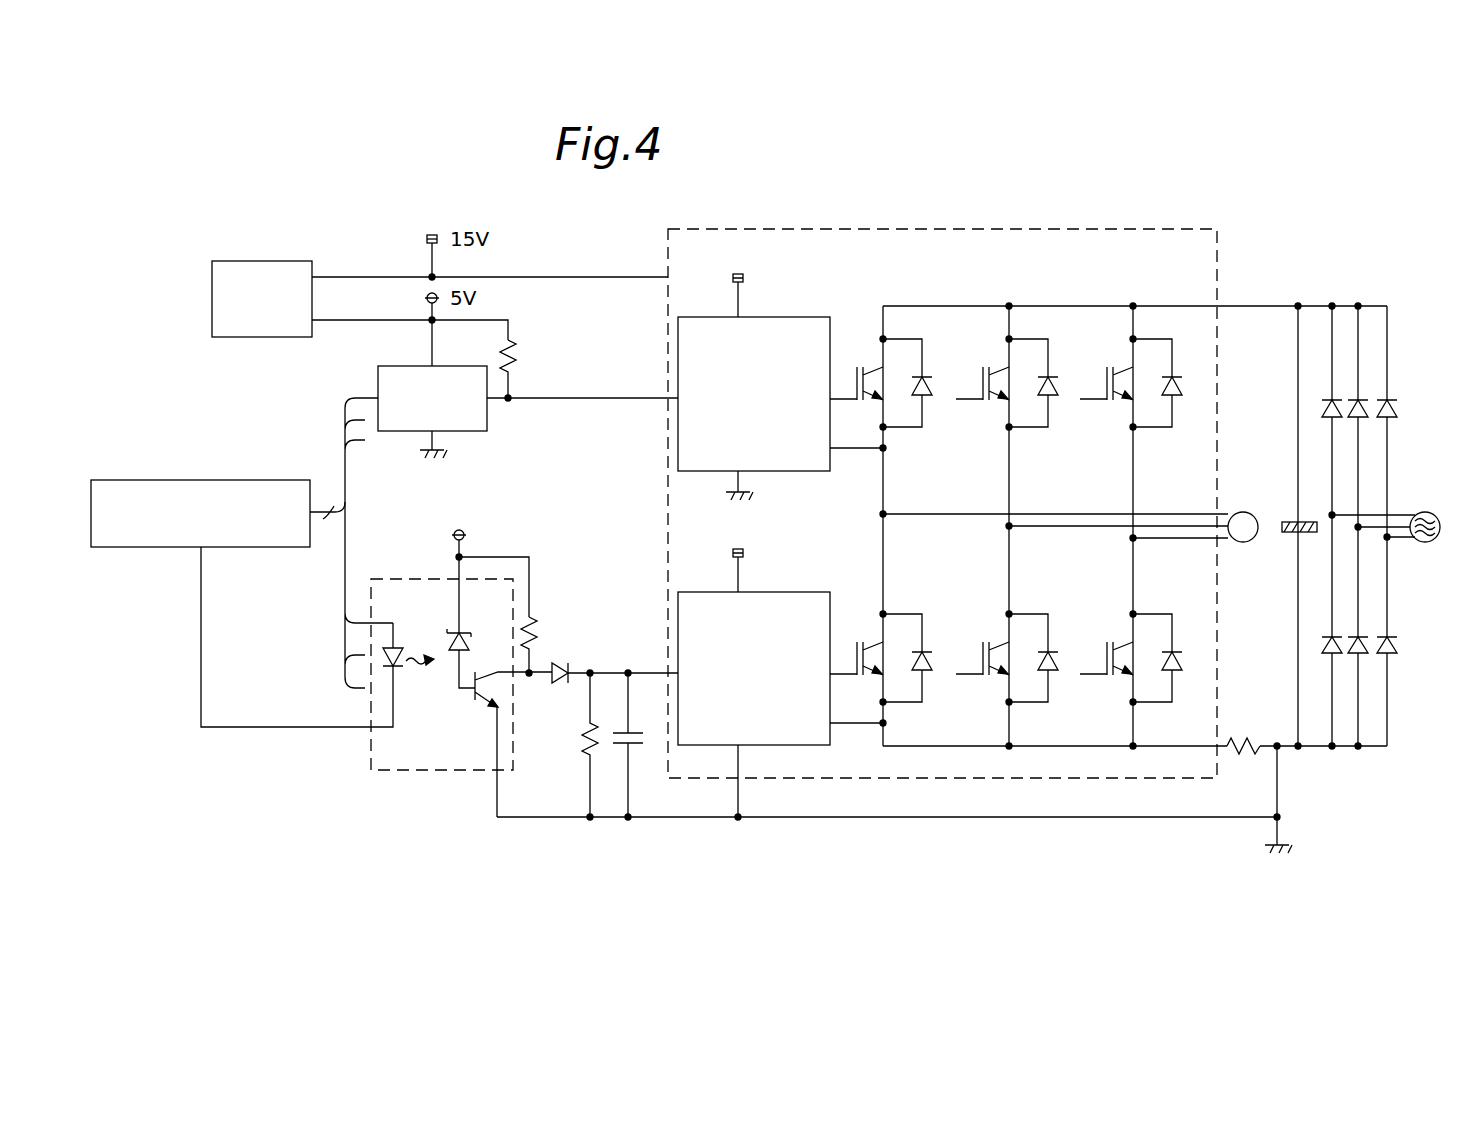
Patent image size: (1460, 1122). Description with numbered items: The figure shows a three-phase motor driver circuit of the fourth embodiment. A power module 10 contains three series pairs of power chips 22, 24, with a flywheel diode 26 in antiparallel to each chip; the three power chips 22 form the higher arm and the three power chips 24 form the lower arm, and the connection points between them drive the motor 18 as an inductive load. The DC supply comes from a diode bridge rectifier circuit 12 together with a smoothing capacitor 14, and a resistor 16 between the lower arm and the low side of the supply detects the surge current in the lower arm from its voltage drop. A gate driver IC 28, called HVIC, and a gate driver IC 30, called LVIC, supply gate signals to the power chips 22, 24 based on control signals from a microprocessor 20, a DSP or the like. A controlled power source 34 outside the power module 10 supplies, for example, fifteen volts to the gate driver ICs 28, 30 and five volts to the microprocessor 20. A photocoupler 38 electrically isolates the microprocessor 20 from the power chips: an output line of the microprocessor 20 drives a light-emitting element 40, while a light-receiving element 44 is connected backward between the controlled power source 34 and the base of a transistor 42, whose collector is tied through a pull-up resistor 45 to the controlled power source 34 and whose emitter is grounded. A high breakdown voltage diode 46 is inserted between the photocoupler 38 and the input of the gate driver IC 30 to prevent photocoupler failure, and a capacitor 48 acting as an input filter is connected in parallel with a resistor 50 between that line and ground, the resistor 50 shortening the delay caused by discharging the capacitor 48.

The power module 10 is at (1217, 268).
The diode bridge rectifier circuit 12 is at (1406, 330).
The smoothing capacitor 14 is at (1290, 521).
The resistor 16 is at (1260, 738).
The motor 18 is at (1252, 543).
The microprocessor 20 is at (297, 480).
The power chip 22 is at (855, 372).
The power chip 24 is at (855, 647).
The flywheel diode 26 is at (928, 398).
The gate driver IC 28 is at (700, 317).
The gate driver IC 30 is at (700, 592).
The controlled power source 34 is at (297, 261).
The photocoupler 38 is at (395, 433).
The light-emitting element 40 is at (400, 645).
The transistor 42 is at (472, 711).
The light-receiving element 44 is at (467, 640).
The pull-up resistor 45 is at (514, 346).
The diode 46 is at (562, 660).
The capacitor 48 is at (640, 748).
The resistor 50 is at (586, 758).